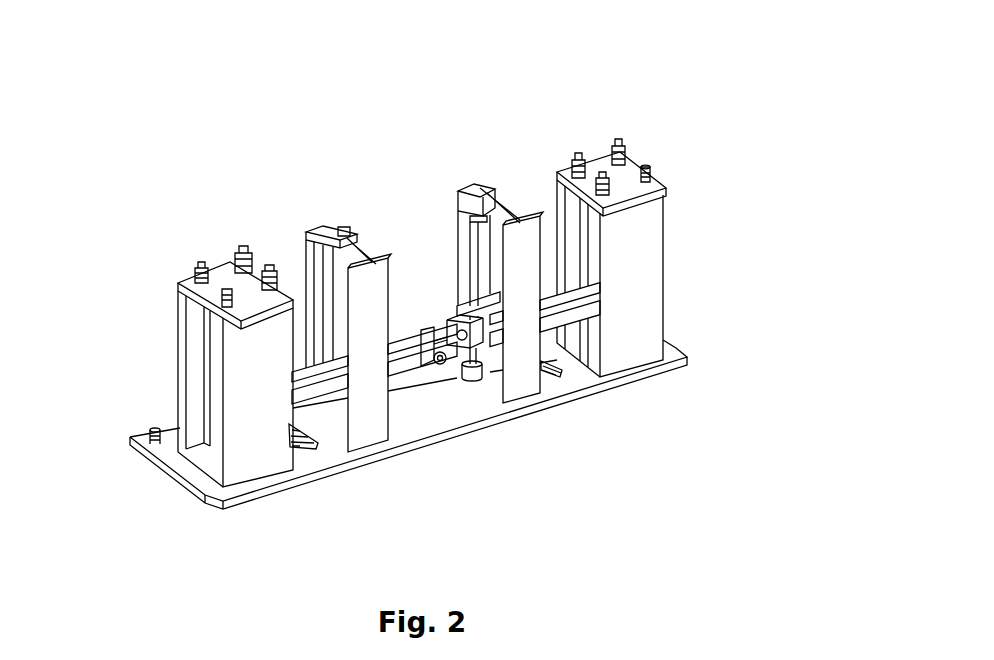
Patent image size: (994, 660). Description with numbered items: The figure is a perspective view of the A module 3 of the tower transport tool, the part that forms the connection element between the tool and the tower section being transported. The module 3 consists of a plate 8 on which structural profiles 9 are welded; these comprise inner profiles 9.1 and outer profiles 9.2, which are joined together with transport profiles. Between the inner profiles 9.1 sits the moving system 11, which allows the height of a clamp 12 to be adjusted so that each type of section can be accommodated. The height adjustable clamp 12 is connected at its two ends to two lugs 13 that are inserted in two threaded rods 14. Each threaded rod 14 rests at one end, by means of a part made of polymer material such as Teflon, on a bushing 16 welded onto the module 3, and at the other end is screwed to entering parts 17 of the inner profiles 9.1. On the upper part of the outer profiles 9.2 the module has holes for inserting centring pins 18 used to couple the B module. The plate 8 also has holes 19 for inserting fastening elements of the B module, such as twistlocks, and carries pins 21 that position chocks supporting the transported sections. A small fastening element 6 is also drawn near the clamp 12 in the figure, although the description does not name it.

The A module 3 is at (657, 85).
The fastening screw bracket 6 is at (432, 345).
The plate 8 is at (200, 473).
The structural profiles 9 is at (362, 327).
The inner profiles 9.1 is at (525, 253).
The outer profiles 9.2 is at (643, 320).
The moving system 11 is at (487, 367).
The clamp 12 is at (345, 226).
The lugs 13 is at (476, 323).
The threaded rods 14 is at (473, 257).
The bushing 16 is at (471, 385).
The entering parts 17 is at (480, 207).
The centring pins 18 is at (650, 165).
The holes 19 is at (302, 452).
The pins 21 is at (153, 433).